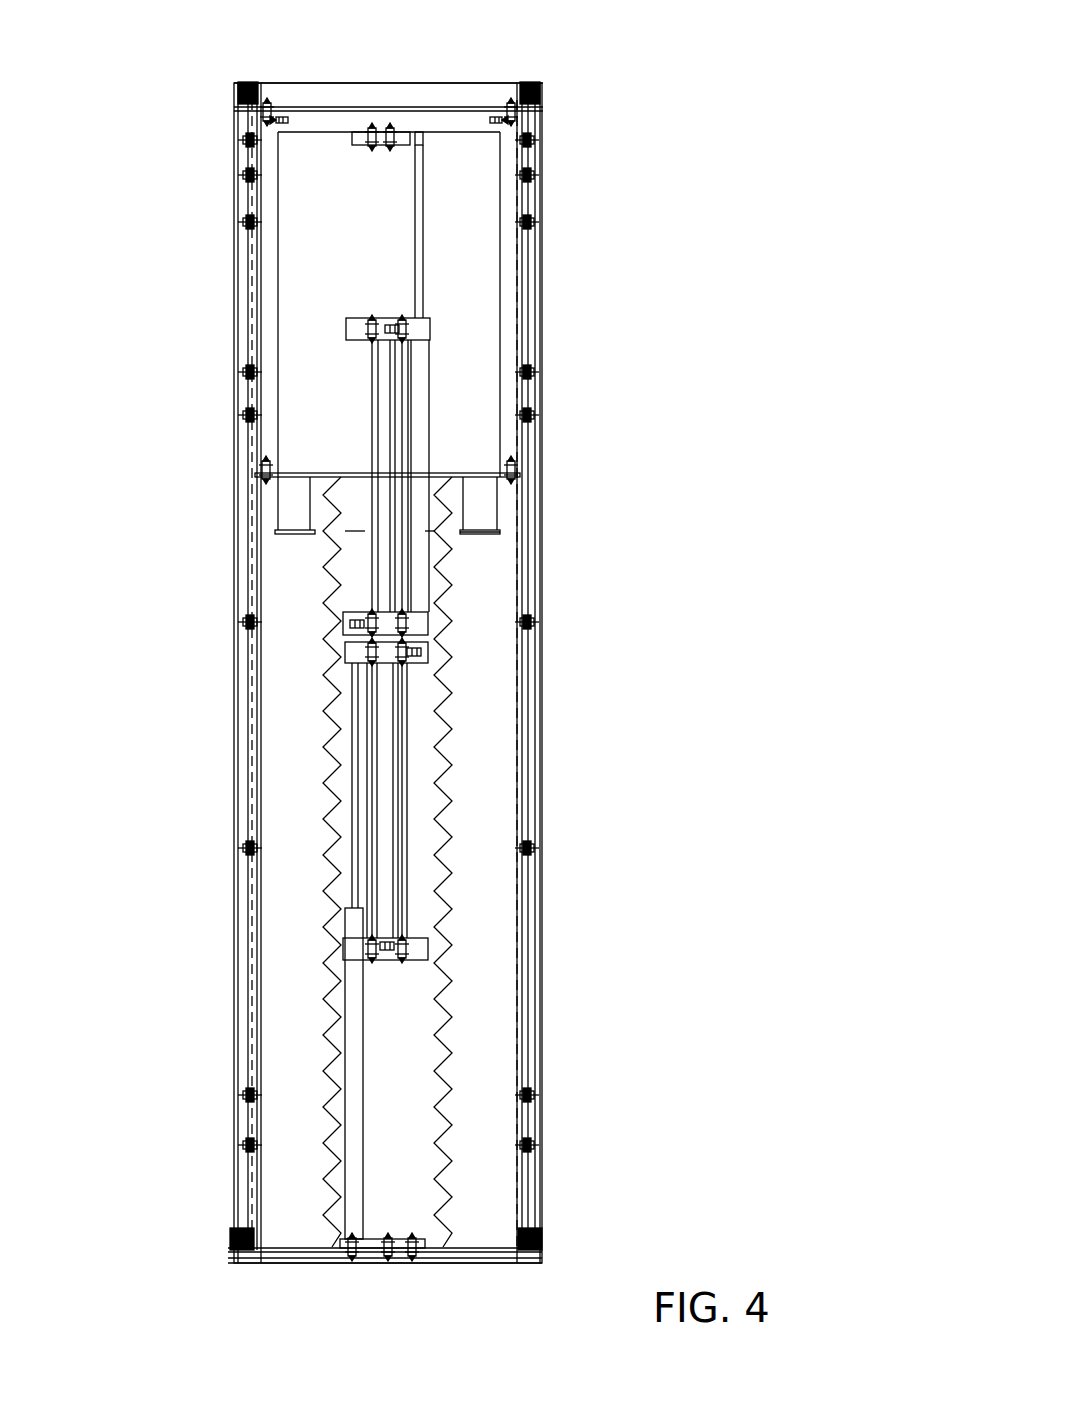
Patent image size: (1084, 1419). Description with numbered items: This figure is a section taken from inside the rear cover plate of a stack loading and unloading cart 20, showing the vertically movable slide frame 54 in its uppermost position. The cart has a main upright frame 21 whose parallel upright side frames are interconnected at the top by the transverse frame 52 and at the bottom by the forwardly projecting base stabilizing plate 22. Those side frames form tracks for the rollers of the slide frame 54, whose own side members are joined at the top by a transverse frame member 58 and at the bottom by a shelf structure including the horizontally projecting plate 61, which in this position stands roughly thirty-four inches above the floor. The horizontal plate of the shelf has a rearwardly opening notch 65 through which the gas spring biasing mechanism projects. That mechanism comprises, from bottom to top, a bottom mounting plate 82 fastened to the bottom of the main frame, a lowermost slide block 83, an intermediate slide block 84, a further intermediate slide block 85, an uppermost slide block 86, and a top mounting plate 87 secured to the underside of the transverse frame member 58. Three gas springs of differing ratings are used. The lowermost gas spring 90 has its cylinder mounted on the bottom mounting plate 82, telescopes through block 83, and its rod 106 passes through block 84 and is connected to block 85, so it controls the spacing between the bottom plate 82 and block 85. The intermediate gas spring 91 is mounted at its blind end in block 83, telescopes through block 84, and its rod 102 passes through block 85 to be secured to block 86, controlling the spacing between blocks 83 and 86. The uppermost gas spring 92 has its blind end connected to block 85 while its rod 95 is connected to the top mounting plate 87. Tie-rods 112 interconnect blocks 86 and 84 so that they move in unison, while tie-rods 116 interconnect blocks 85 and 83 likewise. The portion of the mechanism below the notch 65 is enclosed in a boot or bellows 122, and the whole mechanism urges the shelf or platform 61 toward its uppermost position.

The stack loading and unloading cart 20 is at (565, 496).
The main upright frame 21 is at (560, 664).
The base stabilizing plate 22 is at (485, 1265).
The transverse frame 52 is at (347, 95).
The slide frame 54 is at (558, 250).
The transverse frame member 58 is at (455, 120).
The horizontally projecting plate 61 is at (485, 542).
The cutout or notch 65 is at (354, 470).
The bottom mounting plate 82 is at (398, 1237).
The lowermost slide block 83 is at (425, 948).
The intermediate slide block 84 is at (430, 658).
The further intermediate slide block 85 is at (345, 620).
The uppermost slide block 86 is at (432, 318).
The top mounting plate 87 is at (376, 152).
The lowermost gas spring 90 is at (355, 1030).
The intermediate gas spring 91 is at (395, 803).
The uppermost gas spring 92 is at (425, 400).
The rod 95 is at (416, 215).
The rod 102 is at (395, 570).
The rod 106 is at (358, 745).
The tie-rod 112 is at (372, 578).
The tie-rod 116 is at (372, 872).
The boot or bellows 122 is at (450, 748).